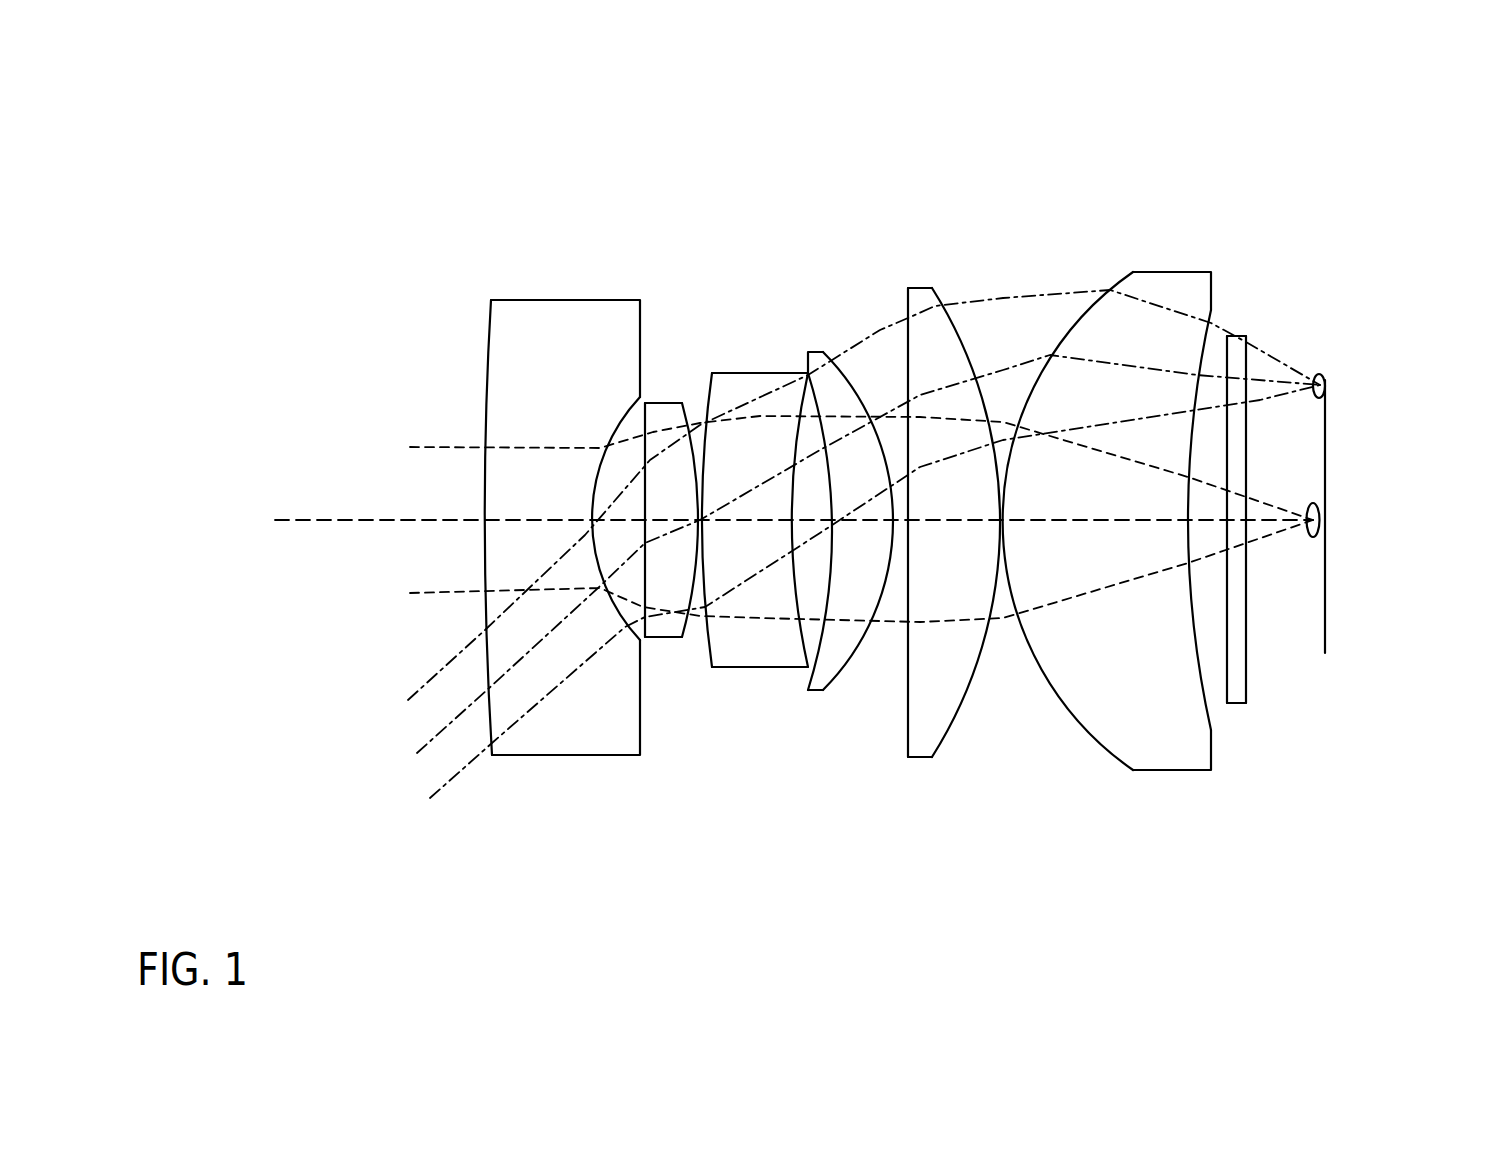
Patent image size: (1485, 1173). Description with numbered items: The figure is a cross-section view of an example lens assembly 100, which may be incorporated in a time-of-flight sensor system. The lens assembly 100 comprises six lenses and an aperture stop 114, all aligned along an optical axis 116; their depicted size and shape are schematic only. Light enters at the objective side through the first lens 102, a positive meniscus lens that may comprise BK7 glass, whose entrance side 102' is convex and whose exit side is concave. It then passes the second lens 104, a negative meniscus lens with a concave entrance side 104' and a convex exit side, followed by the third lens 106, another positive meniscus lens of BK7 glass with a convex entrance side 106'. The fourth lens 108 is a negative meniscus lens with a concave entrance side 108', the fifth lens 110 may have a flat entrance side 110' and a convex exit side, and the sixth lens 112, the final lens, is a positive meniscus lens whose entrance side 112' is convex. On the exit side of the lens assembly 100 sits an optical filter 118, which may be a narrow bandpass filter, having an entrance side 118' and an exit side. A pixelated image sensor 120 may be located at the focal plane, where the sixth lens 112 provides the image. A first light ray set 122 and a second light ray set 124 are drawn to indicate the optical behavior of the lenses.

The lens assembly 100 is at (243, 87).
The first lens 102 is at (520, 489).
The entrance side of first lens 102' is at (432, 527).
The second lens 104 is at (719, 528).
The entrance side of second lens 104' is at (704, 621).
The third lens 106 is at (806, 470).
The entrance side of third lens 106' is at (757, 572).
The fourth lens 108 is at (875, 537).
The entrance side of fourth lens 108' is at (855, 616).
The fifth lens 110 is at (982, 508).
The entrance side of fifth lens 110' is at (965, 548).
The sixth lens 112 is at (1168, 526).
The entrance side of sixth lens 112' is at (1068, 565).
The aperture stop 114 is at (699, 410).
The optical axis 116 is at (377, 520).
The optical filter 118 is at (1295, 500).
The entrance side of optical filter 118' is at (1277, 537).
The pixelated image sensor 120 is at (1325, 598).
The first light ray set 122 is at (1325, 378).
The second light ray set 124 is at (1325, 545).